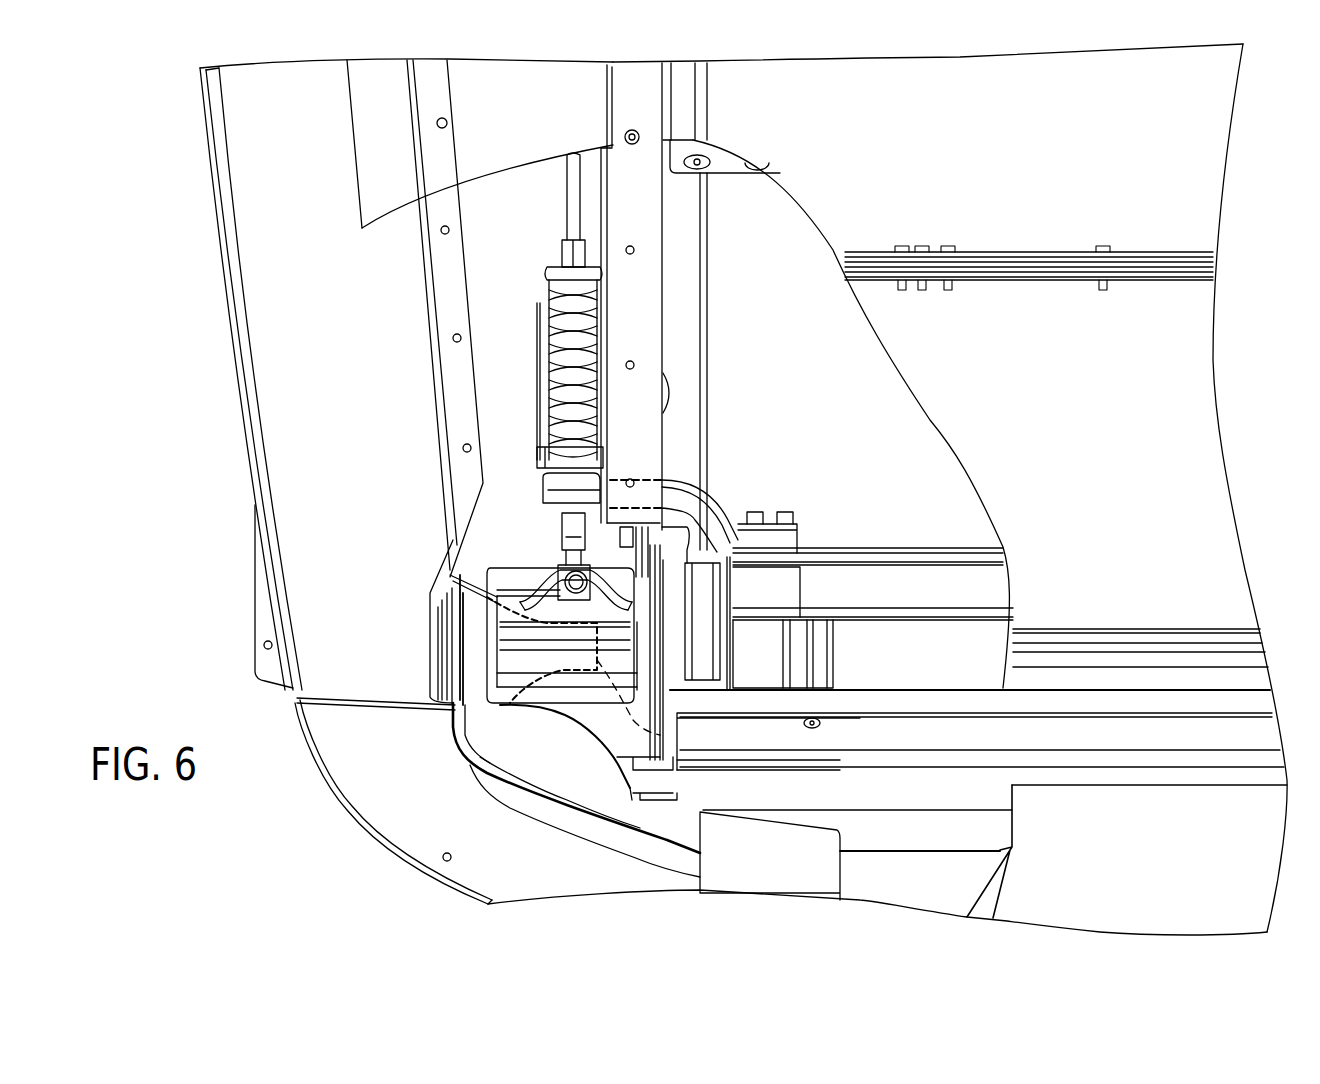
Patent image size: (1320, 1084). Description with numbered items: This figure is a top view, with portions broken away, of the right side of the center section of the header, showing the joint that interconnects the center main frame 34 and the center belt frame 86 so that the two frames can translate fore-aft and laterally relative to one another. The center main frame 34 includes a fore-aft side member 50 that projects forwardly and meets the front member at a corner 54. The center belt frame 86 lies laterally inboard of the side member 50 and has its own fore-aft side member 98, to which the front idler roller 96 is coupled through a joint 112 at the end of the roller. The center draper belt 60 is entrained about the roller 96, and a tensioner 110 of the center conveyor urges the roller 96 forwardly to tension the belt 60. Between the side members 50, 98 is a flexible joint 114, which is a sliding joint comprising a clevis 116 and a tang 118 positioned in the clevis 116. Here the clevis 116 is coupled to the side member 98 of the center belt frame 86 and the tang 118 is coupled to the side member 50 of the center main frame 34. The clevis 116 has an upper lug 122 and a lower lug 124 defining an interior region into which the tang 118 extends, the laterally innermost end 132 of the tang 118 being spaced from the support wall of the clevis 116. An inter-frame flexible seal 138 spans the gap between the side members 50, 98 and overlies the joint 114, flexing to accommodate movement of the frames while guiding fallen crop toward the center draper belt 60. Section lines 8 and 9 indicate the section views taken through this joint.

The center main frame 34 is at (370, 867).
The fore-aft side member 50 is at (290, 380).
The corner 54 is at (350, 765).
The center draper belt 60 is at (1145, 130).
The center belt frame 86 is at (643, 207).
The front idler roller 96 is at (918, 660).
The fore-aft side member 98 is at (643, 250).
The tensioner 110 is at (537, 287).
The joint 112 is at (695, 605).
The flexible joint 114 is at (510, 497).
The clevis 116 is at (595, 712).
The tang 118 is at (477, 707).
The upper lug 122 is at (540, 606).
The lower lug 124 is at (532, 570).
The laterally innermost end 132 is at (680, 733).
The inter-frame flexible seal 138 is at (520, 90).
The section line 8 is at (222, 520).
The section line 9 is at (542, 529).